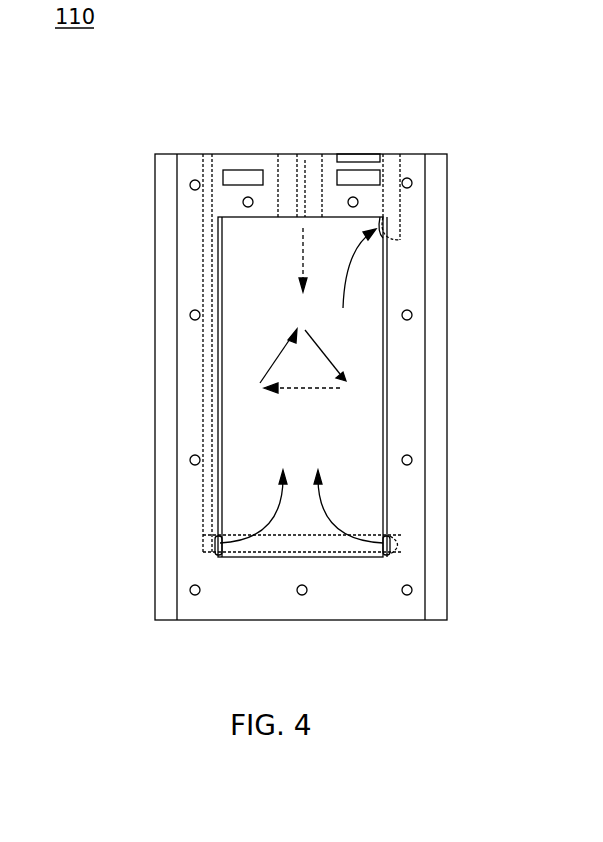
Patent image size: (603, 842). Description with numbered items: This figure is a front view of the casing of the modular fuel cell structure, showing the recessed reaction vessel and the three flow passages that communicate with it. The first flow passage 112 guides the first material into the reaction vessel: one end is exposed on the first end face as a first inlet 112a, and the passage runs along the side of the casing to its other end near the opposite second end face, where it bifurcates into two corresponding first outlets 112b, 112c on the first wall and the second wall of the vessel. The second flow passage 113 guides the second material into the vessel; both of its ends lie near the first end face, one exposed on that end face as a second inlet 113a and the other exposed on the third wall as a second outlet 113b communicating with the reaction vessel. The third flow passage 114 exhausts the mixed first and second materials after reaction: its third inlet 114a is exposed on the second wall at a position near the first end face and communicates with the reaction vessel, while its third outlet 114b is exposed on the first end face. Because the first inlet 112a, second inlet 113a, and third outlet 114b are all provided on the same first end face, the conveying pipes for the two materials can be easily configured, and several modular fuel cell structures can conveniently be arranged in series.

The first flow passage 112 is at (203, 222).
The first inlet 112a is at (207, 152).
The first outlet 112b is at (213, 545).
The first outlet 112c is at (392, 541).
The second flow passage 113 is at (281, 184).
The second inlet 113a is at (297, 152).
The second outlet 113b is at (304, 217).
The third flow passage 114 is at (401, 200).
The third inlet 114a is at (392, 230).
The third outlet 114b is at (392, 152).